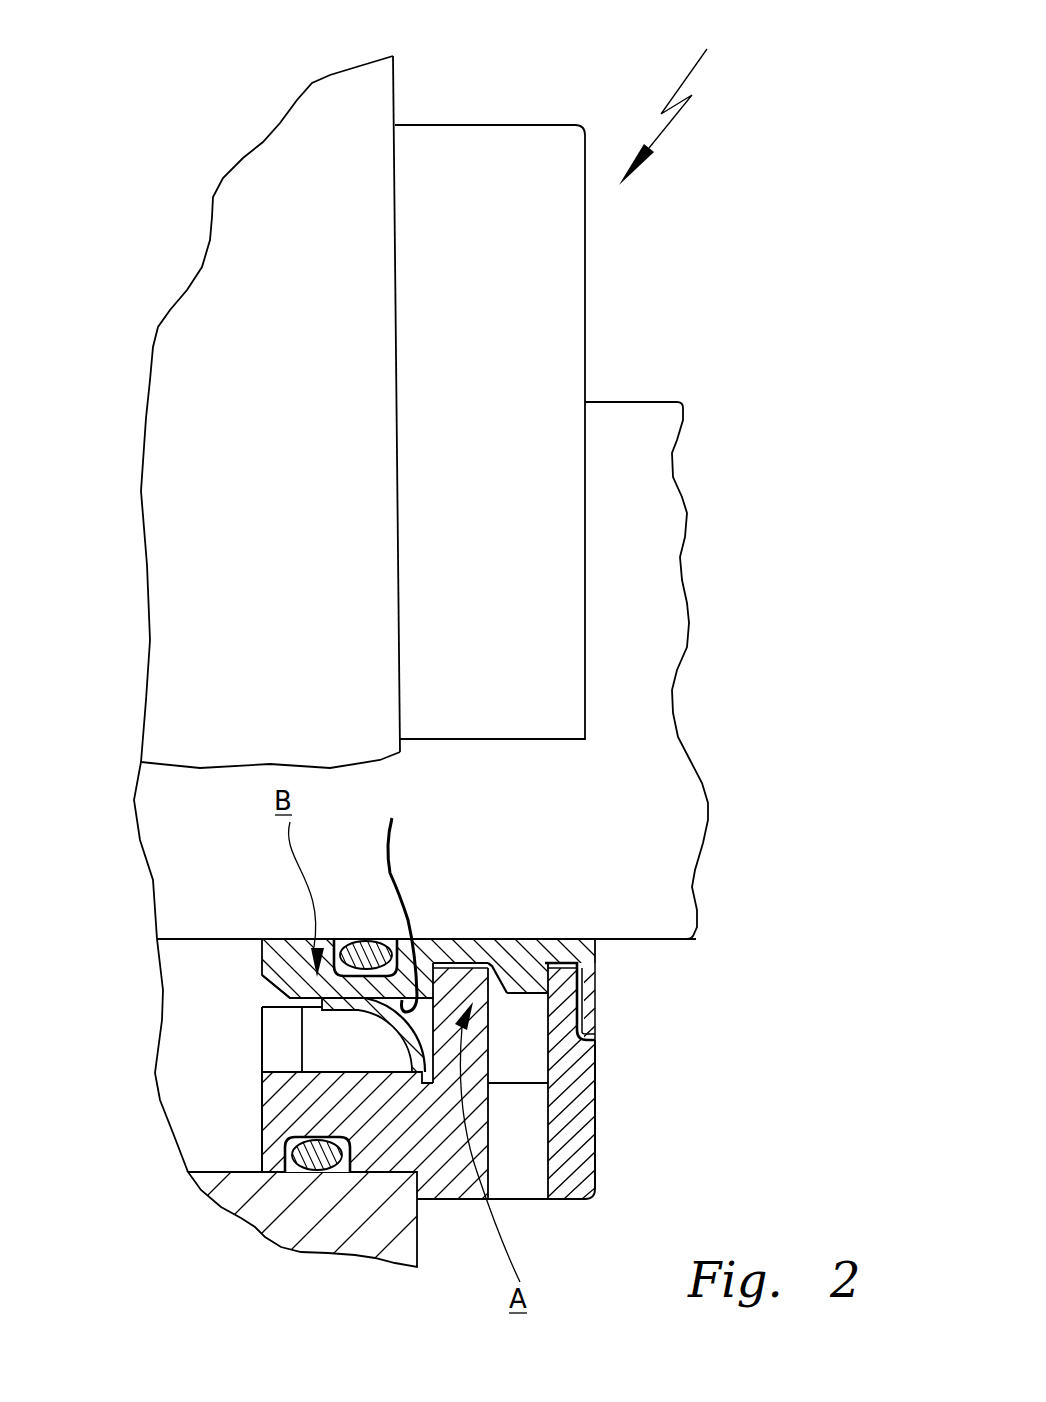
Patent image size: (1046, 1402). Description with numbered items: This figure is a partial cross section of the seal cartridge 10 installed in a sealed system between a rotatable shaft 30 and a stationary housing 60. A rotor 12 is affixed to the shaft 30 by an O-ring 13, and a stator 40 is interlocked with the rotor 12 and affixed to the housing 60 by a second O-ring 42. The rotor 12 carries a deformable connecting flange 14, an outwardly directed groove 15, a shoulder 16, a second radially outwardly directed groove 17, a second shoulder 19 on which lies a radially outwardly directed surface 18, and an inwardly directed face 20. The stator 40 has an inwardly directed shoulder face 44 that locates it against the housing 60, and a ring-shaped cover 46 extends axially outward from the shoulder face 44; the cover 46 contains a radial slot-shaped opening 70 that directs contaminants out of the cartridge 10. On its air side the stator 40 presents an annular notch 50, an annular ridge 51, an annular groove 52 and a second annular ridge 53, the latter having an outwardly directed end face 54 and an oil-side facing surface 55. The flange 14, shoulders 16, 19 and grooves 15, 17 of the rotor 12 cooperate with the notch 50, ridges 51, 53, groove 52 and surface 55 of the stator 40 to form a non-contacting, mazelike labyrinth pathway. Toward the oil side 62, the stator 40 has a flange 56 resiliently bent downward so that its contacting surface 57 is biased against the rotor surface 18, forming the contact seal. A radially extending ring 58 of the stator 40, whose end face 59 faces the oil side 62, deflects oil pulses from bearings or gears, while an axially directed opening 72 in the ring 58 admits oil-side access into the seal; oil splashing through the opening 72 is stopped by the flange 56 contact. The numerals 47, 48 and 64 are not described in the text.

The seal cartridge 10 is at (737, 57).
The rotor 12 is at (376, 995).
The O-ring 13 is at (366, 940).
The connecting flange 14 is at (595, 968).
The outwardly directed groove 15 is at (577, 963).
The shoulder 16 is at (505, 988).
The second radially outwardly directed groove 17 is at (455, 963).
The radially outwardly directed surface 18 is at (397, 899).
The second shoulder 19 is at (440, 962).
The inwardly directed face 20 is at (508, 968).
The rotatable shaft 30 is at (637, 418).
The stator 40 is at (507, 647).
The O-ring 42 is at (285, 1140).
The inwardly directed shoulder face 44 is at (443, 1200).
The ring-shaped cover 46 is at (452, 124).
The rounded corner 47 is at (584, 125).
The sleeve outer surface lower 48 is at (595, 1142).
The annular notch 50 is at (595, 1035).
The annular ridge 51 is at (595, 1012).
The annular groove 52 is at (595, 988).
The second annular ridge 53 is at (503, 985).
The outwardly directed end face 54 is at (492, 1028).
The oil-side facing surface 55 is at (412, 1048).
The flange 56 is at (300, 1002).
The contacting surface 57 is at (300, 983).
The radially extending ring 58 is at (262, 1130).
The end face 59 is at (262, 1063).
The stationary housing 60 is at (275, 685).
The oil side 62 is at (262, 1080).
The shaft shoulder 64 is at (412, 1258).
The radial slot-shaped opening 70 is at (522, 1190).
The axially directed opening 72 is at (278, 1047).